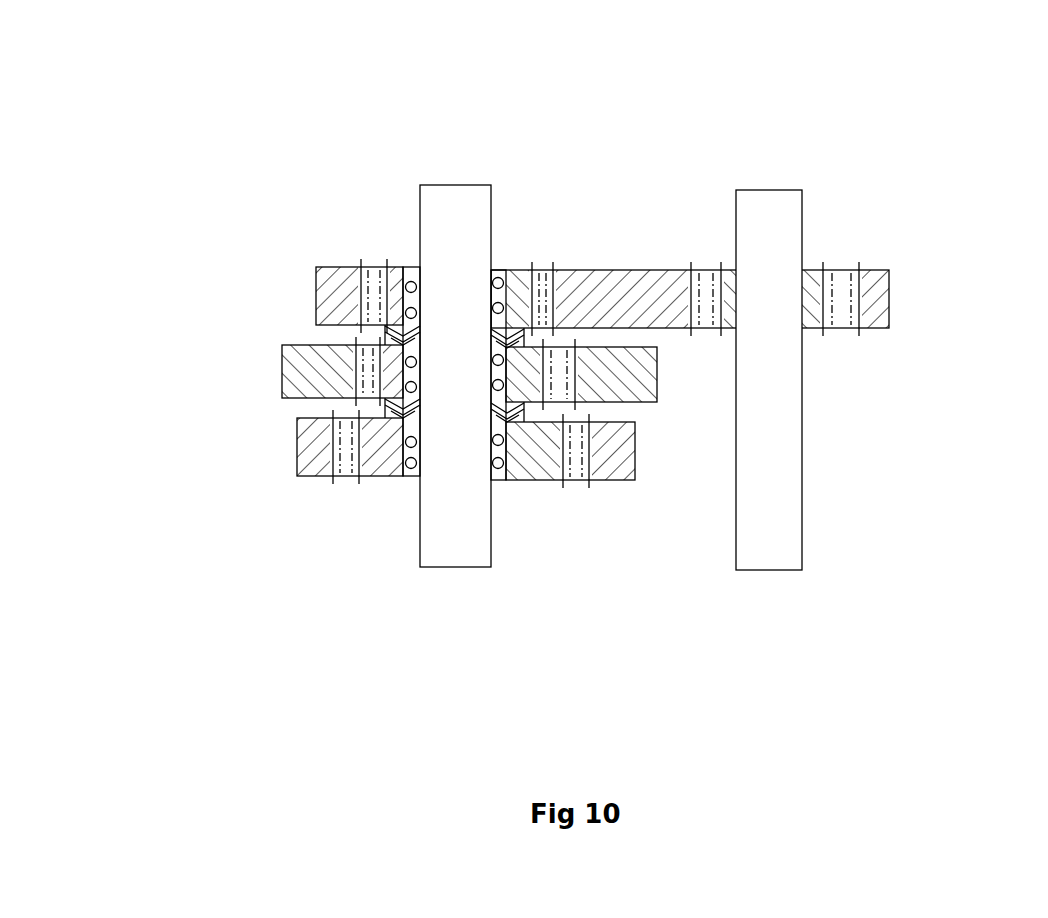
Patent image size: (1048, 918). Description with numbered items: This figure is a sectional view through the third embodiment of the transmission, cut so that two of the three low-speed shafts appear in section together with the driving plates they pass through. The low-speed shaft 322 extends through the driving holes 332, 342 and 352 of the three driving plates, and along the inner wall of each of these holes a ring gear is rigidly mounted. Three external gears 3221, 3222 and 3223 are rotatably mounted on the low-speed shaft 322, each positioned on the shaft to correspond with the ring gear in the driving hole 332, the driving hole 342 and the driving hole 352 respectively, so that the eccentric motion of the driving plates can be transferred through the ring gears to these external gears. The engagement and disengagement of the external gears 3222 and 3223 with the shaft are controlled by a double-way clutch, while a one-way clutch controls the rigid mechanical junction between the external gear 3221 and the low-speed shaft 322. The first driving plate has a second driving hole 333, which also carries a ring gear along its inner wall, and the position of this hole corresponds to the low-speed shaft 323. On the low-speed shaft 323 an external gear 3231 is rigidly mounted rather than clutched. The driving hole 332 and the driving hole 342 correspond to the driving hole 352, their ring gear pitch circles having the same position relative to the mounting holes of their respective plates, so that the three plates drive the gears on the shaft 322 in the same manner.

The low-speed shaft 322 is at (374, 442).
The low-speed shaft 323 is at (815, 446).
The external gear 3221 is at (329, 185).
The external gear 3222 is at (234, 338).
The external gear 3223 is at (541, 562).
The driving hole 332 is at (690, 189).
The external gear 3231 is at (836, 188).
The driving hole 333 is at (934, 192).
The driving hole 342 is at (616, 521).
The driving hole 352 is at (604, 558).